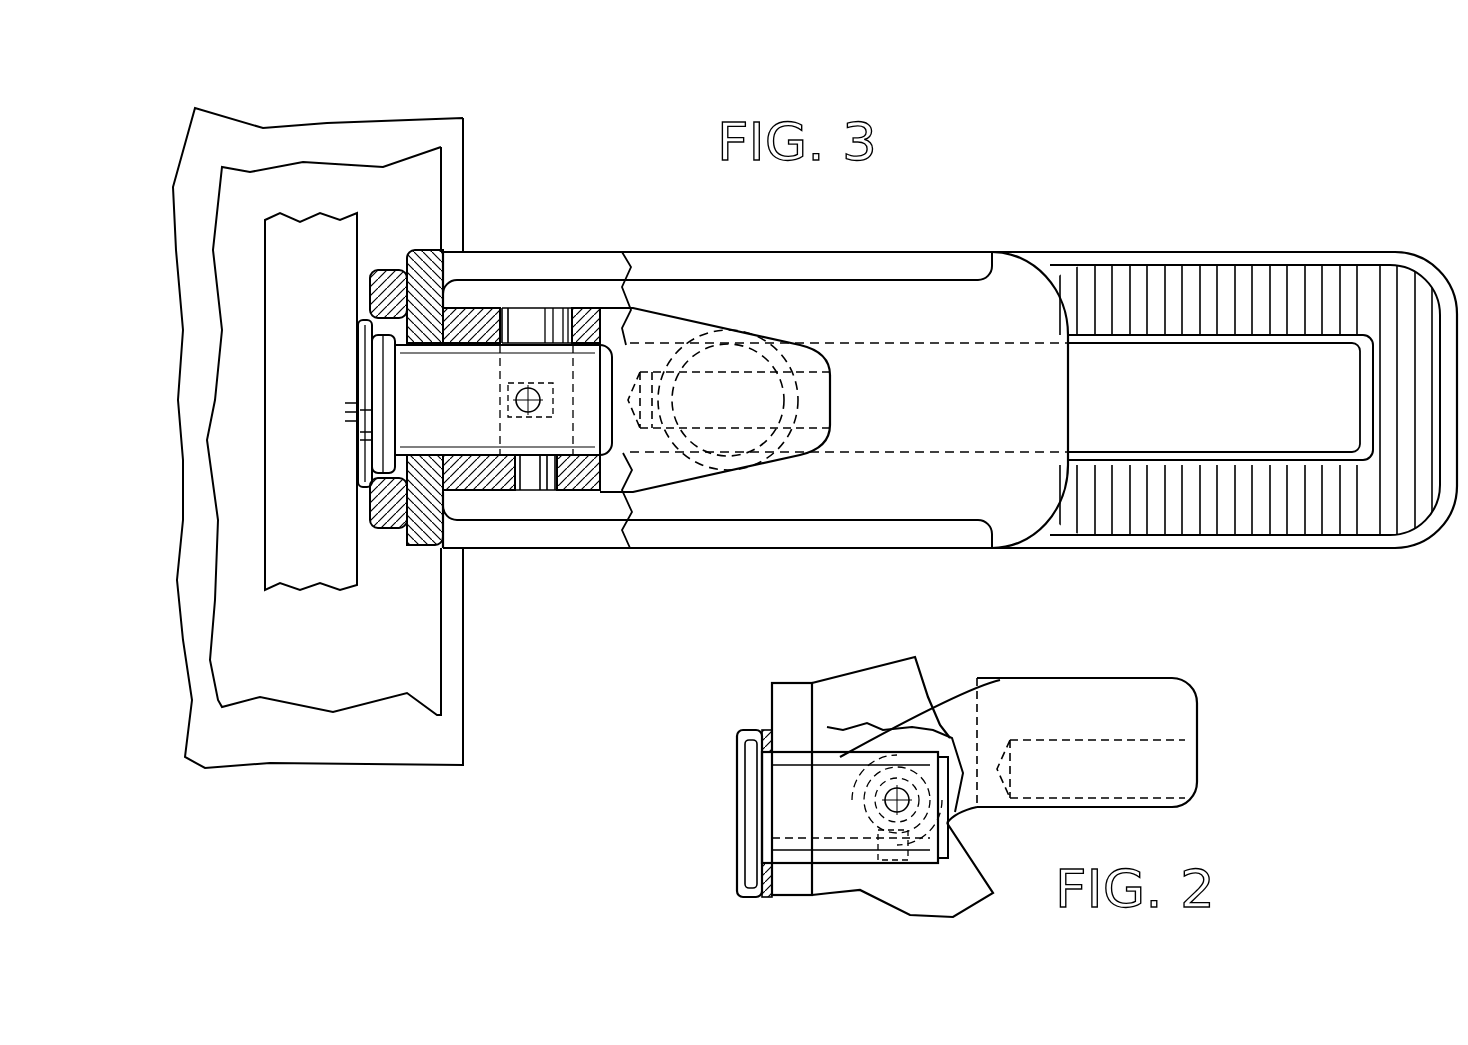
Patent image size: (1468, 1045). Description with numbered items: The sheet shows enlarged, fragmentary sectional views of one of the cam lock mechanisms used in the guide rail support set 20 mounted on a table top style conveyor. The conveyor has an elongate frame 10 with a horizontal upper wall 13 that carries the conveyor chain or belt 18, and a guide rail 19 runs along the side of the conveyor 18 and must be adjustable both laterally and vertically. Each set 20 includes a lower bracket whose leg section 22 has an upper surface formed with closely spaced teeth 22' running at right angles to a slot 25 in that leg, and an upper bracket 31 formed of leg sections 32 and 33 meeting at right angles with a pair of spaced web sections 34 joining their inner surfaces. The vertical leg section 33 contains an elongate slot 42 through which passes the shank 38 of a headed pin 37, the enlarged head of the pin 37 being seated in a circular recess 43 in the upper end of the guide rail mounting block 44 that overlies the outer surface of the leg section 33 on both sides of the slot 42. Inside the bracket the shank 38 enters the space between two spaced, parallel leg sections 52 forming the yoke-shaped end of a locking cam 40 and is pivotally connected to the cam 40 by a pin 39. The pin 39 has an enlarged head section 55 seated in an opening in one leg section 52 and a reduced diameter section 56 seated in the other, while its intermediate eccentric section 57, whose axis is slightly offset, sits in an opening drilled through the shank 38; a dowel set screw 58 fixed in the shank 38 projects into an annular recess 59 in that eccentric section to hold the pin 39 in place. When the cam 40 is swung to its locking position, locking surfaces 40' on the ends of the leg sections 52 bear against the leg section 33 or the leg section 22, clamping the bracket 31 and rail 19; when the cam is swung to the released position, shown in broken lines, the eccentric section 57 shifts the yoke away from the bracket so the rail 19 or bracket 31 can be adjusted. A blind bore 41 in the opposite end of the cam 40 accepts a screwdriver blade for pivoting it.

In FIG. 3, the frame 10 is at (345, 783).
In FIG. 3, the upper wall 13 is at (213, 750).
In FIG. 3, the conveyor chain or belt 18 is at (267, 677).
In FIG. 3, the guide rail 19 is at (263, 325).
In FIG. 3, the guide rail support set 20 is at (614, 242).
In FIG. 3, the leg section 22 is at (1260, 356).
In FIG. 3, the teeth 22' is at (1260, 252).
In FIG. 3, the slot 25 is at (1160, 365).
In FIG. 3, the upper bracket 31 is at (666, 252).
In FIG. 3, the leg section 32 is at (1072, 365).
In FIG. 3, the leg section 33 is at (427, 250).
In FIG. 2, the leg section 33 is at (798, 683).
In FIG. 3, the web section 34 is at (870, 254).
In FIG. 2, the web section 34 is at (893, 677).
In FIG. 3, the headed pin 37 is at (793, 340).
In FIG. 3, the shank 38 is at (451, 419).
In FIG. 3, the pin 39 is at (527, 310).
In FIG. 2, the pin 39 is at (878, 770).
In FIG. 3, the locking cam 40 is at (756, 400).
In FIG. 2, the locking cam 40 is at (1025, 716).
In FIG. 3, the locking surface 40' is at (404, 343).
In FIG. 2, the locking surface 40' is at (747, 848).
In FIG. 3, the blind bore 41 is at (813, 420).
In FIG. 2, the blind bore 41 is at (1163, 767).
In FIG. 3, the elongate slot 42 is at (423, 350).
In FIG. 2, the elongate slot 42 is at (778, 708).
In FIG. 3, the circular recess 43 is at (383, 338).
In FIG. 2, the circular recess 43 is at (740, 883).
In FIG. 3, the guide rail mounting block 44 is at (385, 268).
In FIG. 2, the guide rail mounting block 44 is at (750, 897).
In FIG. 3, the leg section 52 is at (478, 305).
In FIG. 3, the head section 55 is at (565, 310).
In FIG. 3, the reduced diameter section 56 is at (550, 470).
In FIG. 3, the eccentric section 57 is at (578, 455).
In FIG. 3, the dowel set screw 58 is at (503, 383).
In FIG. 3, the annular recess 59 is at (617, 547).